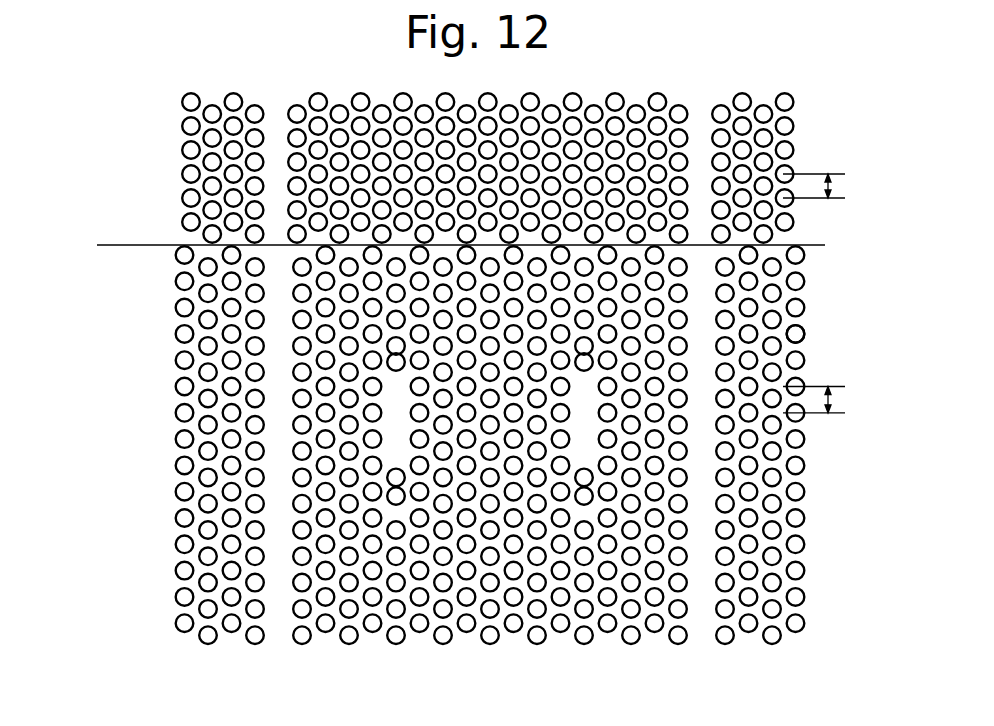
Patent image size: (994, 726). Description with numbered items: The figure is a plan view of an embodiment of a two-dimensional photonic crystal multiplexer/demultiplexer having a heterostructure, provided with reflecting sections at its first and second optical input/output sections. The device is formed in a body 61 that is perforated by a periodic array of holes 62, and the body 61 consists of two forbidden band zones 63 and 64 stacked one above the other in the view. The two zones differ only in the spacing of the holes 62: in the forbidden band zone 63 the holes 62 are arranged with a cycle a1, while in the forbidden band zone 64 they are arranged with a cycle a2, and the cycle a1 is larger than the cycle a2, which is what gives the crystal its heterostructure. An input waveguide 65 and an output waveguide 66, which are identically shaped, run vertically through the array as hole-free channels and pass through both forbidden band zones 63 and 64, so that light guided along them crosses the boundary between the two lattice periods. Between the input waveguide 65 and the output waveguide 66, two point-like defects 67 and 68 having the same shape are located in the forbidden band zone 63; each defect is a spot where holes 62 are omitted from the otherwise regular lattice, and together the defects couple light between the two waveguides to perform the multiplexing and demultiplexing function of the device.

The body 61 is at (783, 510).
The holes 62 is at (795, 337).
The forbidden band zone 63 is at (130, 635).
The forbidden band zone 64 is at (130, 105).
The input waveguide 65 is at (272, 115).
The output waveguide 66 is at (697, 115).
The point-like defect 67 is at (395, 412).
The point-like defect 68 is at (583, 412).
The cycle of the holes a1 is at (823, 399).
The cycle of the holes a2 is at (823, 186).